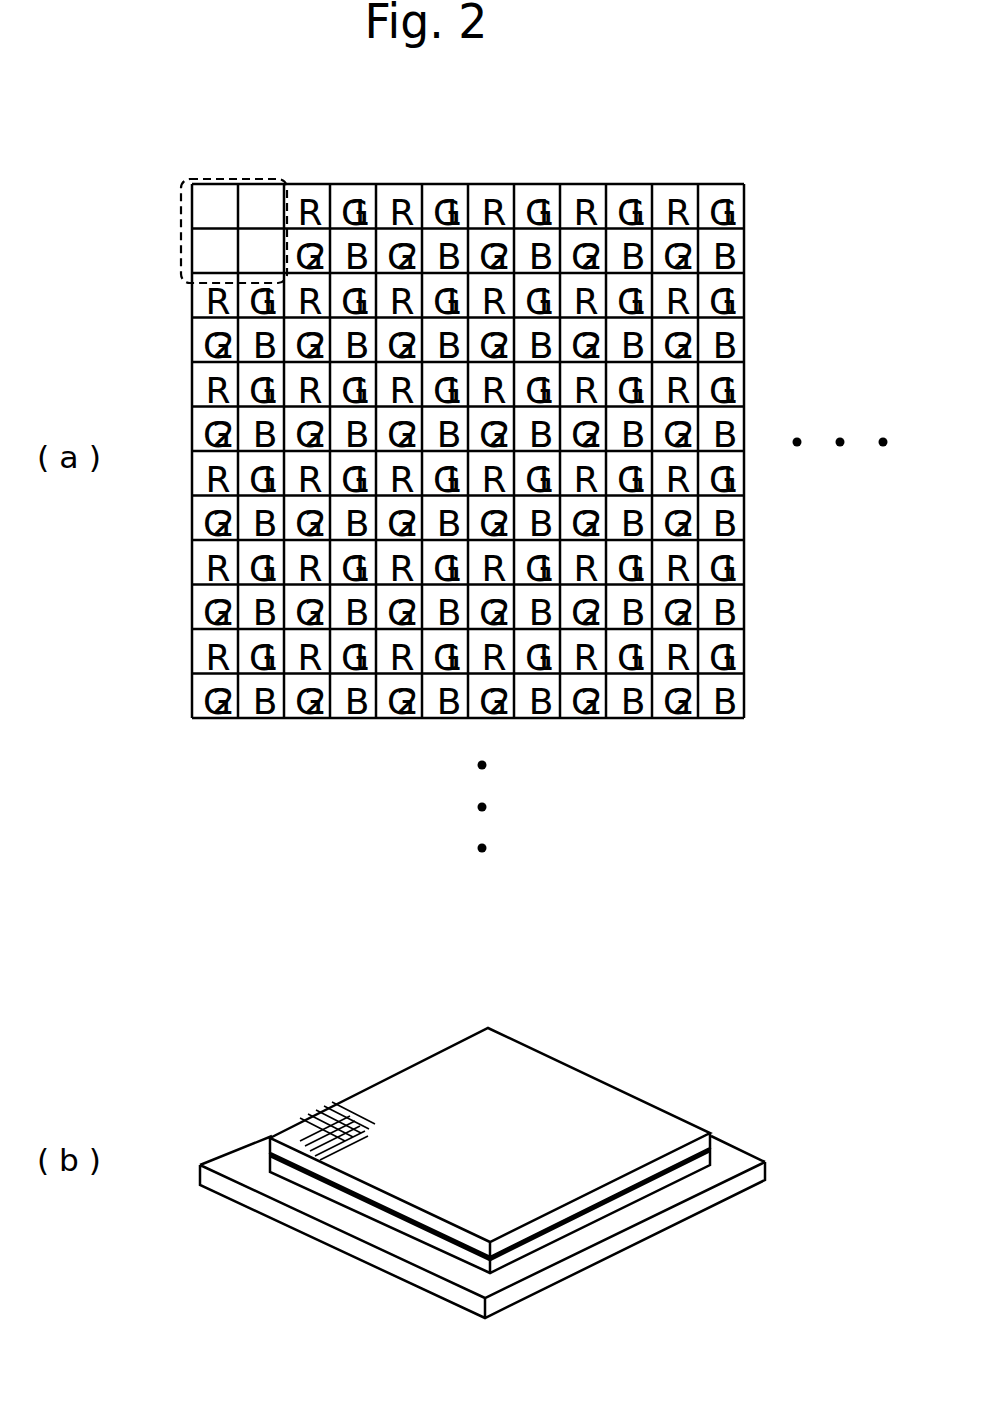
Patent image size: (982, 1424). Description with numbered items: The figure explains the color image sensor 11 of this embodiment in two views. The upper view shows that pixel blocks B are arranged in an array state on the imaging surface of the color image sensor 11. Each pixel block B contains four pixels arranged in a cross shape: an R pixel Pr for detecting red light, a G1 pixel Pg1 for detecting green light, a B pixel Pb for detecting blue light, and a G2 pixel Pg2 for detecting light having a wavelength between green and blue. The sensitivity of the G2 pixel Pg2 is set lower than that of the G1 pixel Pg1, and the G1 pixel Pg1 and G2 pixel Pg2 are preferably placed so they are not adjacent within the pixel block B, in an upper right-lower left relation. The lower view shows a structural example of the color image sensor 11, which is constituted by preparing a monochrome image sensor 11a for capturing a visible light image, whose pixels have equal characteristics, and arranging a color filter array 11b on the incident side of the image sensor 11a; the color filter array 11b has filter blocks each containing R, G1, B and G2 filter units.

The pixel block B is at (208, 178).
The R pixel Pr is at (190, 196).
The G1 pixel Pg1 is at (248, 198).
The G2 pixel Pg2 is at (190, 250).
The B pixel Pb is at (277, 255).
The color image sensor 11 is at (482, 1134).
The color filter array 11b is at (587, 1090).
The image sensor 11a is at (612, 1212).